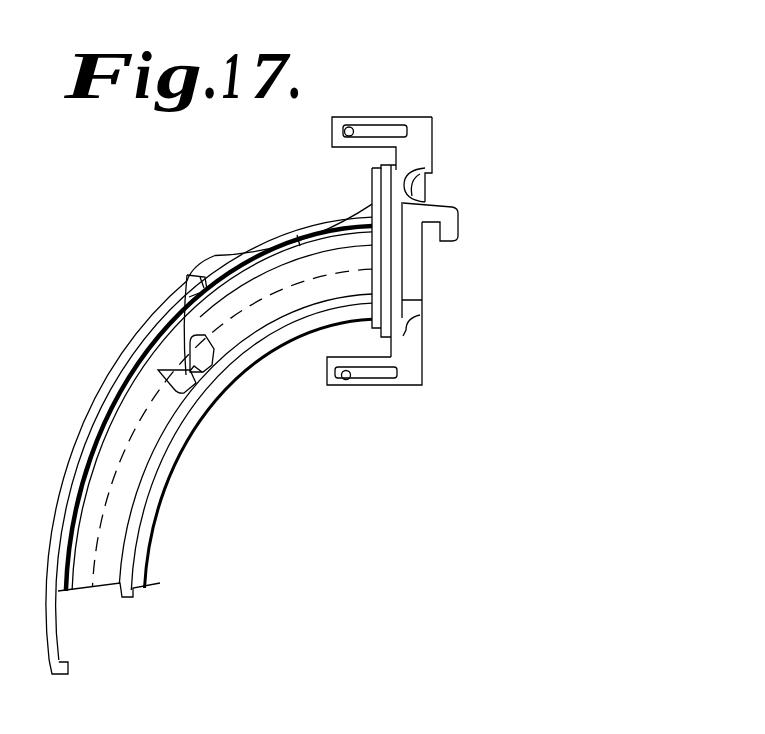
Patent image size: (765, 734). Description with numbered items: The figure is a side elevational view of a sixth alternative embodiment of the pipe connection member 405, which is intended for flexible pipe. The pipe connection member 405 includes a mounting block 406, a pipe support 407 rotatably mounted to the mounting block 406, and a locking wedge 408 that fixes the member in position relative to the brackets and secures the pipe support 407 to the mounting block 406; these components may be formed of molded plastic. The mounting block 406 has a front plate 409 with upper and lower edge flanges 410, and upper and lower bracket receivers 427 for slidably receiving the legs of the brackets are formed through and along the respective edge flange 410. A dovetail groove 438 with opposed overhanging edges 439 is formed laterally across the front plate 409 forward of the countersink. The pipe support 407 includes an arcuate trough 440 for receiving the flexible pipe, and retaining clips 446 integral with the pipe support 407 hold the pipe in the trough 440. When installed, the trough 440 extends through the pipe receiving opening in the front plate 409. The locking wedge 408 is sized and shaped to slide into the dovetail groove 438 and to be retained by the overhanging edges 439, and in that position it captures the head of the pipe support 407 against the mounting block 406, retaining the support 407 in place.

The pipe connection member 405 is at (428, 64).
The mounting block 406 is at (448, 112).
The pipe support 407 is at (112, 353).
The locking wedge 408 is at (421, 296).
The front plate 409 is at (434, 159).
The edge flanges 410 is at (363, 116).
The bracket receivers 427 is at (346, 136).
The dovetail groove 438 is at (404, 173).
The overhanging edges 439 is at (427, 197).
The arcuate trough 440 is at (153, 515).
The retaining clips 446 is at (203, 261).